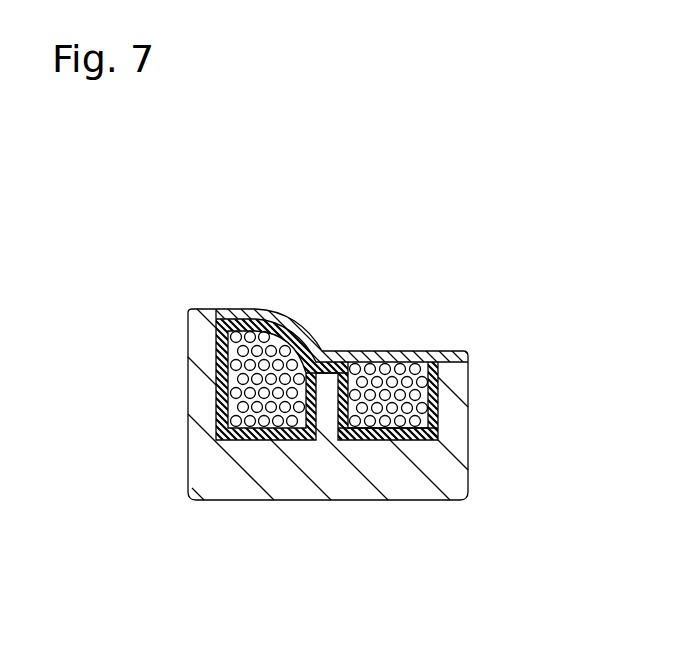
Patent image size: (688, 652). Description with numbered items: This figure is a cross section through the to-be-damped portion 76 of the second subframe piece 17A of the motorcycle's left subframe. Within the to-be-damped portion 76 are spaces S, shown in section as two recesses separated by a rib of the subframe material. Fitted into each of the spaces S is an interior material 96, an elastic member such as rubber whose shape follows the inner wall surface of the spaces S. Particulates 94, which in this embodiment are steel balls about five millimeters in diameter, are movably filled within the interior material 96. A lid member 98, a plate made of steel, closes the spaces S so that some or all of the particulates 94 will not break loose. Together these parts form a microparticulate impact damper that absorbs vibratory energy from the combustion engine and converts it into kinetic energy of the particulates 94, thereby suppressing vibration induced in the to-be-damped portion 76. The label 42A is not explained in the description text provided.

The mounting structure 42A is at (390, 282).
The second subframe piece 17A is at (492, 362).
The to-be-damped portion 76 is at (367, 500).
The lid member 98 is at (440, 350).
The particulates 94 is at (226, 403).
The interior material 96 is at (432, 428).
The spaces S is at (357, 349).